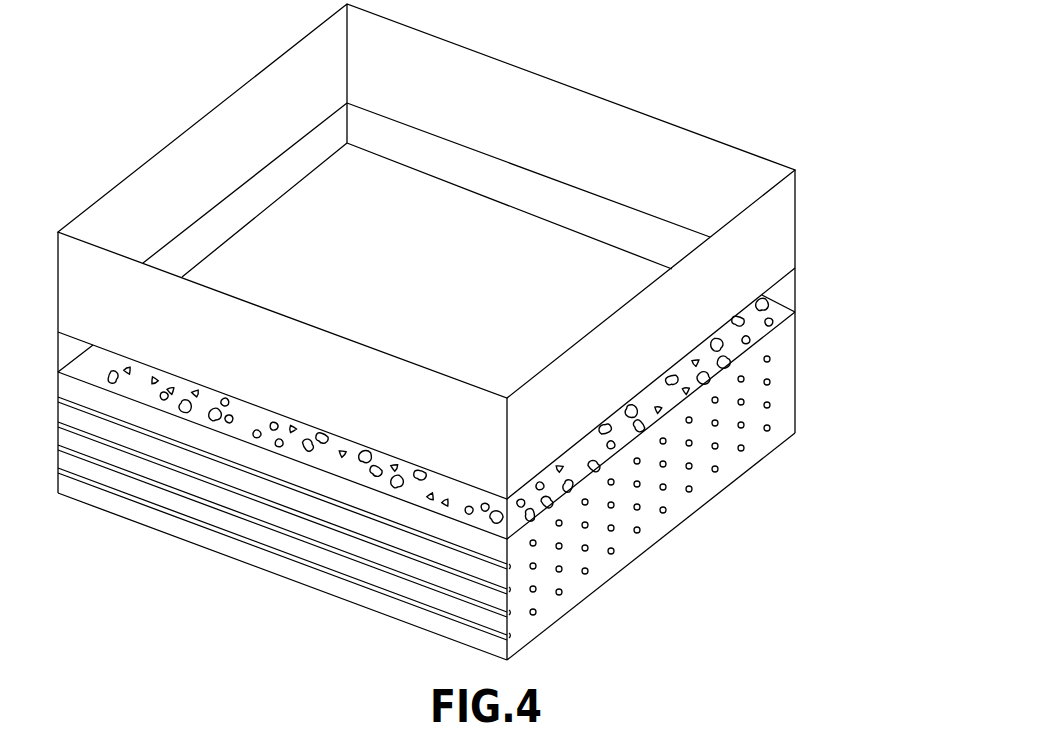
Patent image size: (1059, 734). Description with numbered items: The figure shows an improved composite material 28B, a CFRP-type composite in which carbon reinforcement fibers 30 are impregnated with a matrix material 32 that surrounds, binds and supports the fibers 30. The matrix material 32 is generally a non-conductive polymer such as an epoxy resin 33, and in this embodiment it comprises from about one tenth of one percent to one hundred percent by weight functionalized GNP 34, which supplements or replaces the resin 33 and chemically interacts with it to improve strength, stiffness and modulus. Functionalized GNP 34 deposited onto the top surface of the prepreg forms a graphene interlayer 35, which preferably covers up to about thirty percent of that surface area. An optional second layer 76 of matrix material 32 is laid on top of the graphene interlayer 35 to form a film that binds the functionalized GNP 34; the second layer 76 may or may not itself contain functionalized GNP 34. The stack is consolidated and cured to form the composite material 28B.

The composite material 28B is at (678, 72).
The second layer of matrix material 76 is at (313, 152).
The epoxy resin 33 is at (768, 230).
The functionalized GNP 34 is at (763, 302).
The matrix material 32 is at (785, 363).
The carbon reinforcement fibers 30 is at (125, 493).
The graphene interlayer 35 is at (545, 498).